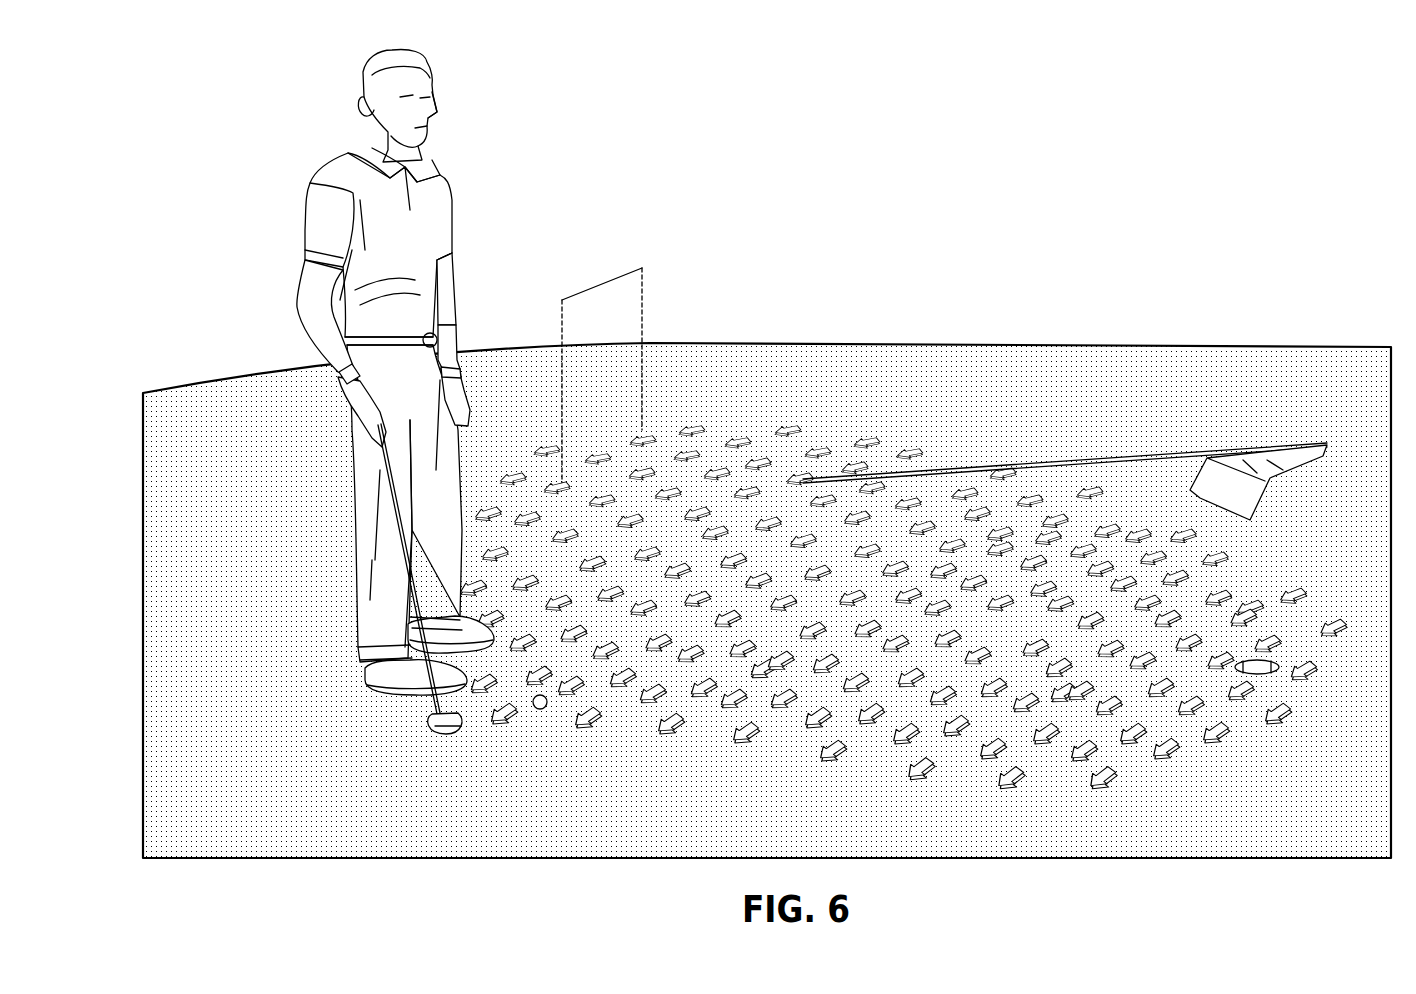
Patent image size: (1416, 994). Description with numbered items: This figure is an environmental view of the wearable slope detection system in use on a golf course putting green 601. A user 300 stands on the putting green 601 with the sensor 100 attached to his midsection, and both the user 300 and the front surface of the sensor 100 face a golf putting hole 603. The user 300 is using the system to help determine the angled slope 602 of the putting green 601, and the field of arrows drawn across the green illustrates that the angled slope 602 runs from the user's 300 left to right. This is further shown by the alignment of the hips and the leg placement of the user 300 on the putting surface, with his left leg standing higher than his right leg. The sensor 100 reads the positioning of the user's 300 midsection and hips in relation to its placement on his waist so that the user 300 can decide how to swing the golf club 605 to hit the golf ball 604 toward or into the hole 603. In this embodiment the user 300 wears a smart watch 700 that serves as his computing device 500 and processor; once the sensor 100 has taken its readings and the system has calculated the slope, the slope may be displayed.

The sensor 100 is at (460, 338).
The user 300 is at (336, 172).
The computing device 500 is at (340, 378).
The putting green 601 is at (390, 858).
The angled slope 602 is at (604, 290).
The golf putting hole 603 is at (1263, 673).
The golf ball 604 is at (542, 710).
The golf club 605 is at (372, 486).
The smart watch 700 is at (332, 358).